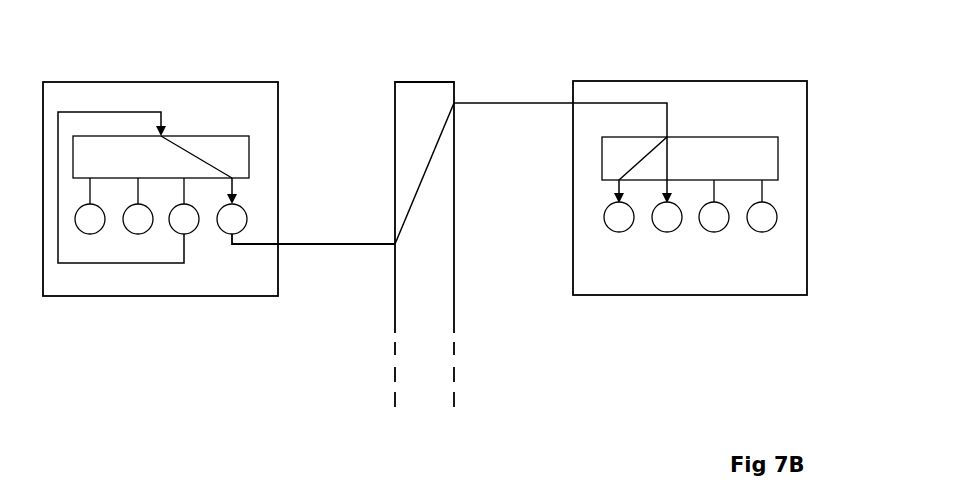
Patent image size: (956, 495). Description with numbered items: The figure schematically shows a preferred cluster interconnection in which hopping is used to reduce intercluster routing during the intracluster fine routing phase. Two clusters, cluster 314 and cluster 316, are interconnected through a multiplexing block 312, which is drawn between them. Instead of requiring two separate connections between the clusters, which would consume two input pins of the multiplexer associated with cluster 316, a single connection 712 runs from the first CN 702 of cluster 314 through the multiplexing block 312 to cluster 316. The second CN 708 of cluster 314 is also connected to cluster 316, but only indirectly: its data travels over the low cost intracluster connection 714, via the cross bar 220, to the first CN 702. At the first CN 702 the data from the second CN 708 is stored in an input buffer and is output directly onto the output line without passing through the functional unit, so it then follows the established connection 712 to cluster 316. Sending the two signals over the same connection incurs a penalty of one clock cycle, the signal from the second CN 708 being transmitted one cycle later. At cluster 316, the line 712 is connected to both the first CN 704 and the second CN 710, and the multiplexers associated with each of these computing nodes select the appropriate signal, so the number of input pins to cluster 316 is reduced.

The cluster 314 is at (220, 82).
The cross bar 220 is at (207, 136).
The first CN 702 is at (247, 216).
The second CN 708 is at (197, 227).
The intracluster connection 714 is at (93, 263).
The single connection 712 is at (313, 244).
The multiplexing block 312 is at (415, 82).
The cluster 316 is at (688, 81).
The second CN 710 is at (615, 232).
The first CN 704 is at (672, 232).